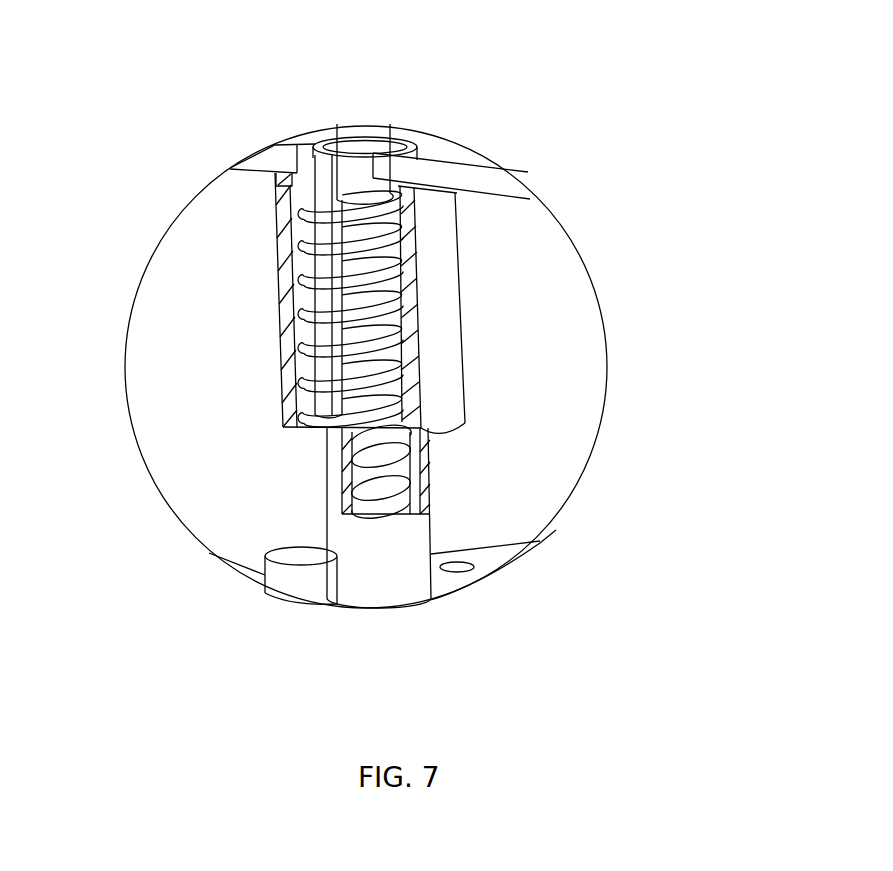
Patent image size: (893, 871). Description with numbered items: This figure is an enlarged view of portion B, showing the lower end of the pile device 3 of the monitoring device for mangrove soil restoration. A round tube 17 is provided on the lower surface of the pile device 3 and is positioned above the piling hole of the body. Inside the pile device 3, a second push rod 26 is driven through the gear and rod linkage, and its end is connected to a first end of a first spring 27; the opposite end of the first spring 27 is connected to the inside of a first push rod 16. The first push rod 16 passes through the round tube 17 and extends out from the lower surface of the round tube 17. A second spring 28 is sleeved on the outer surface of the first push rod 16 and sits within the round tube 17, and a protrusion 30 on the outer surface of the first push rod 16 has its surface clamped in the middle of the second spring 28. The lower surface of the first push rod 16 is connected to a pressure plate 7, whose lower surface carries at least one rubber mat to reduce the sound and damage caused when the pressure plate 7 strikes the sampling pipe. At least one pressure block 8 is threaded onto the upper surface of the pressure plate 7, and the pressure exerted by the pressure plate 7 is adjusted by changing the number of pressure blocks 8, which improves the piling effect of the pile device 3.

The pile device 3 is at (459, 152).
The pressure plate 7 is at (455, 576).
The pressure block 8 is at (308, 585).
The first push rod 16 is at (381, 558).
The round tube 17 is at (437, 272).
The second push rod 26 is at (363, 140).
The first spring 27 is at (405, 510).
The second spring 28 is at (314, 246).
The protrusion 30 is at (309, 328).
The portion B is at (608, 345).